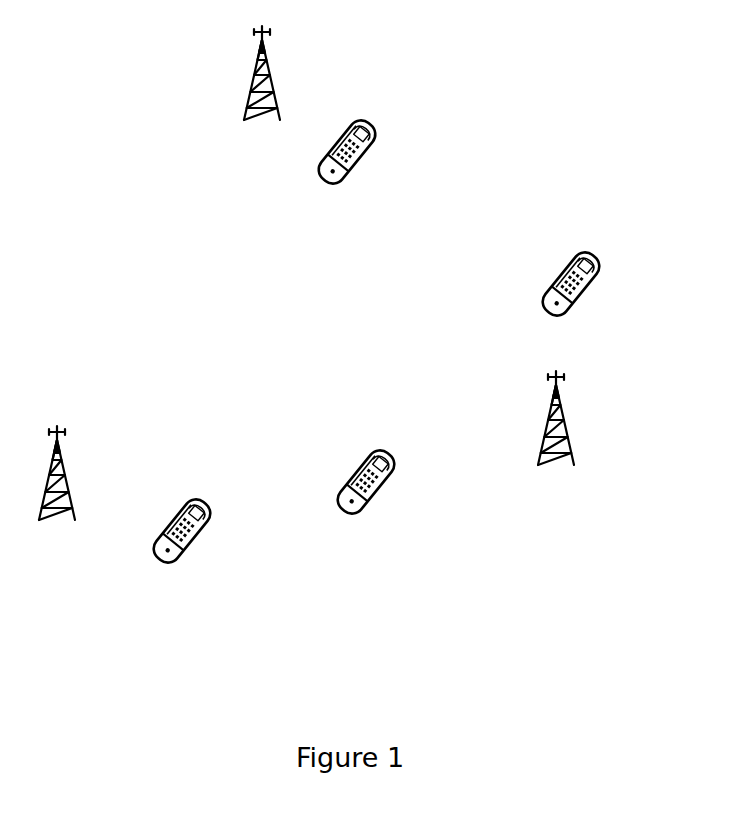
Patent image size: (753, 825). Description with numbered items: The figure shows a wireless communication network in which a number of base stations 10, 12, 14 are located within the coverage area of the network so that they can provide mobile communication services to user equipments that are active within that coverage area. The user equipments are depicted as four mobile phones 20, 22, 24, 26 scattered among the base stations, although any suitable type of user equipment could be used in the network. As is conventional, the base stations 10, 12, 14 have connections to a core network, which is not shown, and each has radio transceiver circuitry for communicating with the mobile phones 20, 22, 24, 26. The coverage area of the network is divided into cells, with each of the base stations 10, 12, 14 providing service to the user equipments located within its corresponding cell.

The base station 10 is at (72, 485).
The base station 12 is at (275, 84).
The base station 14 is at (572, 432).
The mobile phone 20 is at (207, 530).
The mobile phone 22 is at (372, 157).
The mobile phone 24 is at (390, 490).
The mobile phone 26 is at (602, 295).